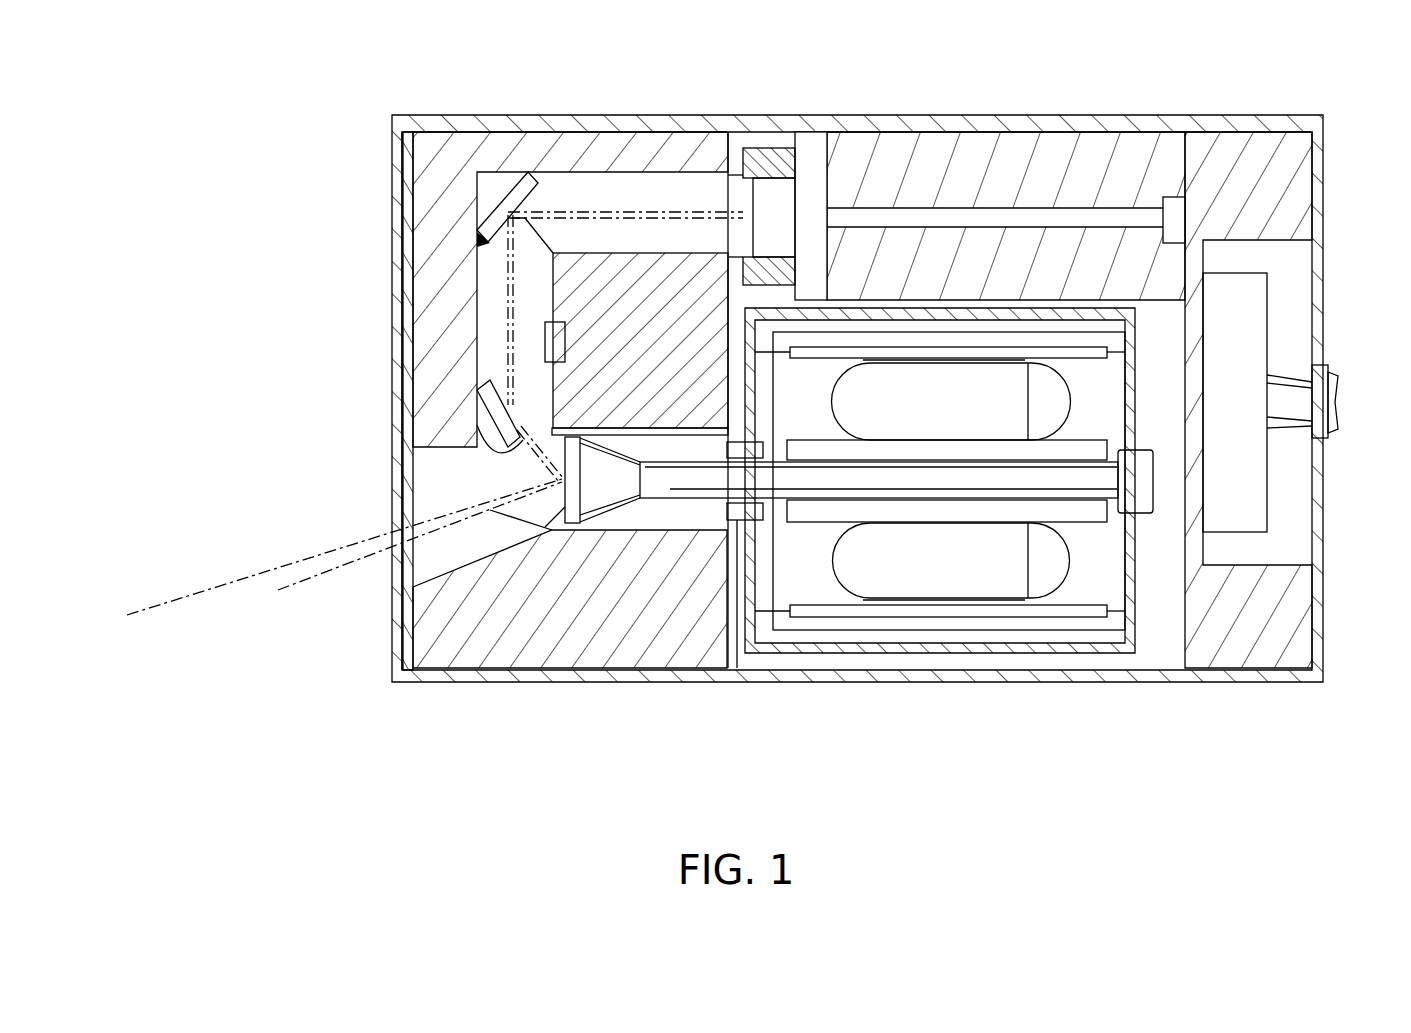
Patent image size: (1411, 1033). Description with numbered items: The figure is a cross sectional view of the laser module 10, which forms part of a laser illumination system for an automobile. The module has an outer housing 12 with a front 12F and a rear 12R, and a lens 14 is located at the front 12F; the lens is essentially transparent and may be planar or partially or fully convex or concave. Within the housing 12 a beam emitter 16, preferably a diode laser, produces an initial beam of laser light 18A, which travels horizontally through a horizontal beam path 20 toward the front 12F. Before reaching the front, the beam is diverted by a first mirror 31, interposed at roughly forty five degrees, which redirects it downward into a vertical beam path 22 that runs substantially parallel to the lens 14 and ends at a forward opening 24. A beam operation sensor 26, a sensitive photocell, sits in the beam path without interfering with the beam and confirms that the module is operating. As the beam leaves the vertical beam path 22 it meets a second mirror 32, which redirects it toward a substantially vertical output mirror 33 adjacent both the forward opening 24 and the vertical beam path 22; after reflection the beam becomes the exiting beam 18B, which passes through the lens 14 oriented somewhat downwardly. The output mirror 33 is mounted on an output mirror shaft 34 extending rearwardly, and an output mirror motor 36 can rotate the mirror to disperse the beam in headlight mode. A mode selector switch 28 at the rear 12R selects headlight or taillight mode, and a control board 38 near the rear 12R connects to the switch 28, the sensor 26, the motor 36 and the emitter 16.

The laser module 10 is at (376, 731).
The outer housing 12 is at (1214, 684).
The front 12F is at (394, 122).
The rear 12R is at (1324, 183).
The lens 14 is at (408, 628).
The beam emitter 16 is at (979, 132).
The initial beam of laser light 18A is at (673, 212).
The exiting beam 18B is at (277, 567).
The horizontal beam path 20 is at (610, 183).
The vertical beam path 22 is at (478, 268).
The forward opening 24 is at (433, 572).
The beam operation sensor 26 is at (545, 348).
The mode selector switch 28 is at (1339, 394).
The first mirror 31 is at (538, 183).
The second mirror 32 is at (490, 378).
The output mirror 33 is at (562, 510).
The output mirror shaft 34 is at (662, 500).
The output mirror motor 36 is at (948, 654).
The control board 38 is at (1270, 310).